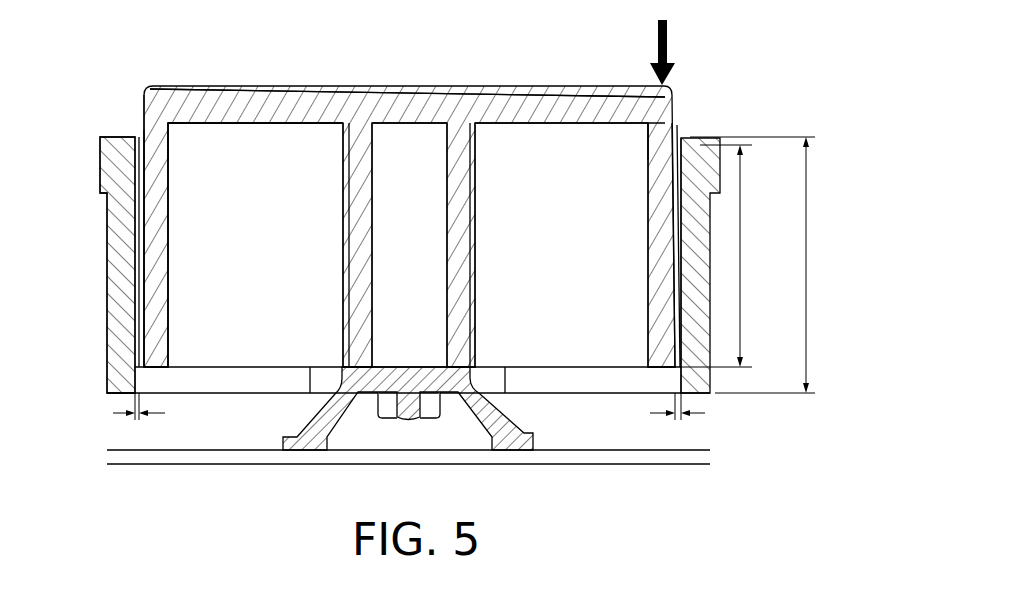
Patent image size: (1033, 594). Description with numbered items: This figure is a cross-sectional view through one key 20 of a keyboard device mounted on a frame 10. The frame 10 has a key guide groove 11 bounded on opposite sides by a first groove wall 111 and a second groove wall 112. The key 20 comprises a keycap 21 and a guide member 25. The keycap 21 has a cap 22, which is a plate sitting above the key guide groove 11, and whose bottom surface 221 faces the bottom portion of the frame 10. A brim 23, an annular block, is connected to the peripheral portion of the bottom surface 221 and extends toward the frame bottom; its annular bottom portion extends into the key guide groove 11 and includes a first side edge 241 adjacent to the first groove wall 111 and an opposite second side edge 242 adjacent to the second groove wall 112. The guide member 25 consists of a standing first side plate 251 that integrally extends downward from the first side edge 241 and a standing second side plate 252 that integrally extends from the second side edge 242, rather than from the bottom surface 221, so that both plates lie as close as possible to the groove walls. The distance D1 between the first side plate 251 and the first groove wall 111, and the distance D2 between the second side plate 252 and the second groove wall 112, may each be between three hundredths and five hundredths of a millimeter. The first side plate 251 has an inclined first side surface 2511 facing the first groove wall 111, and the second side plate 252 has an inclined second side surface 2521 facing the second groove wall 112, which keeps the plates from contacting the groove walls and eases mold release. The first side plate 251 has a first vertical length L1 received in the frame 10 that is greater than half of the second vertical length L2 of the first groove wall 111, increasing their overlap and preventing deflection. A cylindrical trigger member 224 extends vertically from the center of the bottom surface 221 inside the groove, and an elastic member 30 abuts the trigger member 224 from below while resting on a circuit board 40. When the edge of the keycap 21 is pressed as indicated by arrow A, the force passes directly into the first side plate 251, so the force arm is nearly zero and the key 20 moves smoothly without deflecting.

The frame 10 is at (100, 140).
The key guide groove 11 is at (680, 138).
The first groove wall 111 is at (690, 274).
The second groove wall 112 is at (112, 314).
The key 20 is at (517, 77).
The keycap 21 is at (283, 31).
The cap 22 is at (279, 93).
The brim 23 is at (216, 93).
The bottom surface 221 is at (270, 124).
The trigger member 224 is at (347, 262).
The first side edge 241 is at (663, 147).
The second side edge 242 is at (165, 142).
The guide member 25 is at (169, 223).
The first side plate 251 is at (660, 210).
The first side surface 2511 is at (676, 243).
The second side plate 252 is at (143, 212).
The second side surface 2521 is at (140, 258).
The elastic member 30 is at (513, 452).
The circuit board 40 is at (598, 456).
The arrow A is at (668, 45).
The first vertical length L1 is at (725, 256).
The second vertical length L2 is at (763, 265).
The distance D1 is at (702, 422).
The distance D2 is at (114, 422).